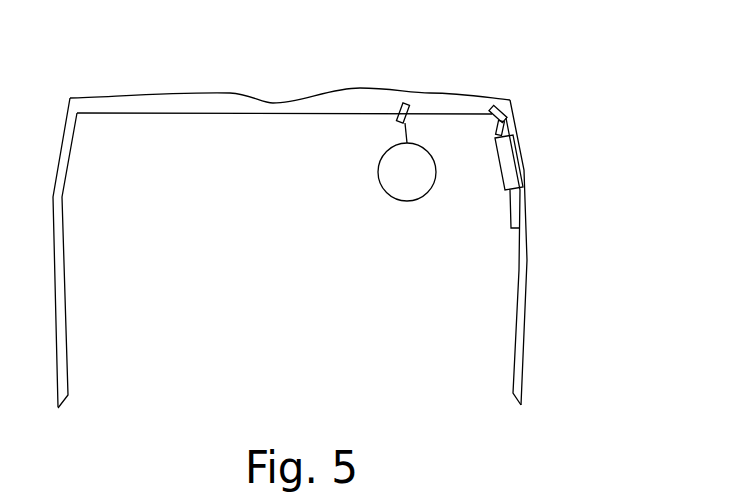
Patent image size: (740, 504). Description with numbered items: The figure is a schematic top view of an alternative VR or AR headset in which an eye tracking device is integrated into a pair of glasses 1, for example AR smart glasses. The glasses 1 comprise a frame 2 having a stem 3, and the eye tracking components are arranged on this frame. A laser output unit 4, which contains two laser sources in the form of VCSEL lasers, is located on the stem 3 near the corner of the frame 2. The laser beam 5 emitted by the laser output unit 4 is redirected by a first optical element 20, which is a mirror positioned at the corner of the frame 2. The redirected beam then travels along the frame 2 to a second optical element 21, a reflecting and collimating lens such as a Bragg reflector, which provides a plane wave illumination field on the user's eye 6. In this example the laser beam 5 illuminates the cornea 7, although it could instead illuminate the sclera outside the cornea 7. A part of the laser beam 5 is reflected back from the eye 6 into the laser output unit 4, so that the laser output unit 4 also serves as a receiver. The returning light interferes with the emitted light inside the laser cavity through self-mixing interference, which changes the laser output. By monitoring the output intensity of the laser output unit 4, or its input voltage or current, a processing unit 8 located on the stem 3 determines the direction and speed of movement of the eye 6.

The pair of glasses 1 is at (595, 93).
The frame 2 is at (490, 97).
The stem 3 is at (528, 243).
The laser output unit 4 is at (512, 163).
The laser beam 5 is at (503, 133).
The user's eye 6 is at (400, 183).
The cornea 7 is at (395, 142).
The processing unit 8 is at (508, 218).
The first optical element 20 is at (506, 102).
The second optical element 21 is at (398, 104).